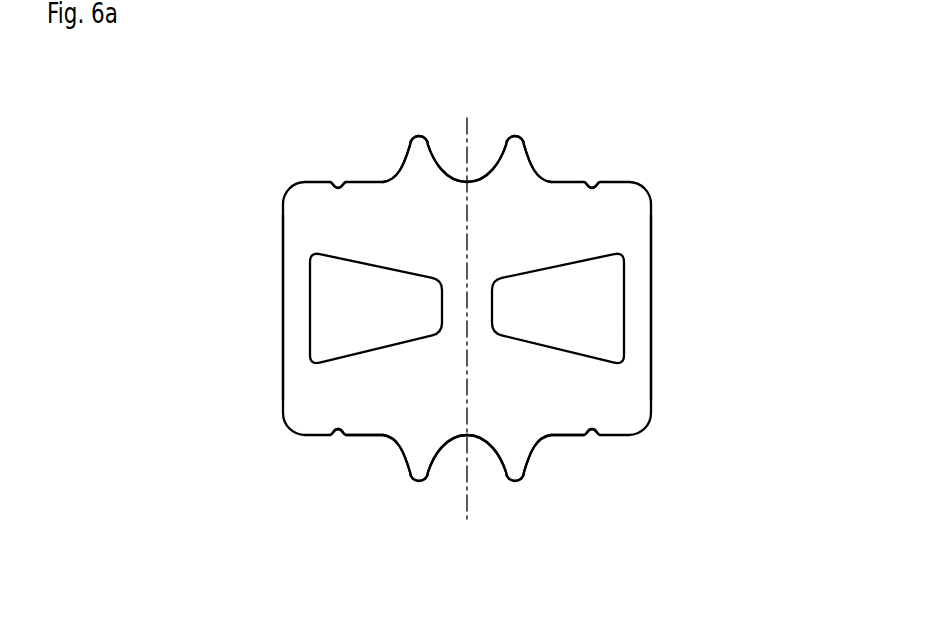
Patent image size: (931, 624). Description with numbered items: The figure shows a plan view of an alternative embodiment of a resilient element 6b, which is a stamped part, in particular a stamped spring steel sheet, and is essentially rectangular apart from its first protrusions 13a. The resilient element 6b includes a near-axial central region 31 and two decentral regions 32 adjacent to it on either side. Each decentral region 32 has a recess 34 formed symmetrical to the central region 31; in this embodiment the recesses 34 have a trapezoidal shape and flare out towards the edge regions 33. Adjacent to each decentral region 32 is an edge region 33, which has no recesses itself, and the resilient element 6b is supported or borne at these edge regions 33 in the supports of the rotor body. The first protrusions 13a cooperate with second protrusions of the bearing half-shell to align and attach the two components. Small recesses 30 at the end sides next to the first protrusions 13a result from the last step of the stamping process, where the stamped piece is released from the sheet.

The resilient element 6b is at (618, 217).
The first protrusions 13a is at (517, 163).
The recesses 30 is at (339, 186).
The central region 31 is at (480, 308).
The decentral regions 32 is at (405, 384).
The edge region 33 is at (297, 326).
The recesses 34 is at (340, 297).